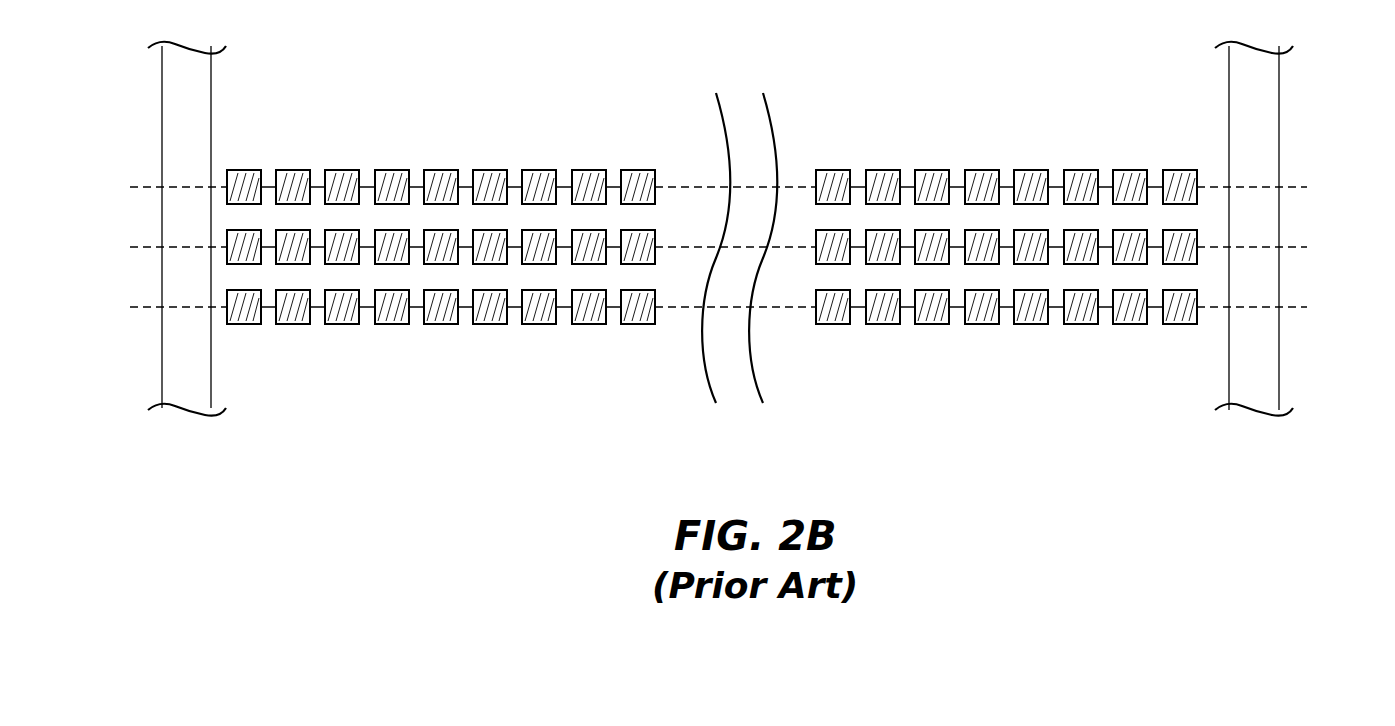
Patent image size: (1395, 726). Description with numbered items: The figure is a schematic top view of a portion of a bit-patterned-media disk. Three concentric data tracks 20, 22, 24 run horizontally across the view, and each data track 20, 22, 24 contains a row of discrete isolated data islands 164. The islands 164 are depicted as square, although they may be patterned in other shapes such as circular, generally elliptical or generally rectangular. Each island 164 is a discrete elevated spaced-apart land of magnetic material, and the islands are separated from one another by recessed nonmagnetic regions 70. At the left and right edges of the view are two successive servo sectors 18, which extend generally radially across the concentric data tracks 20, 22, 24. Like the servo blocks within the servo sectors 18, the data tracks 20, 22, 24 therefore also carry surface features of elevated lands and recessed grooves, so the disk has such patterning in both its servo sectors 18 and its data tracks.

The servo sector 18 is at (196, 83).
The data track 20 is at (1298, 308).
The data track 22 is at (1298, 248).
The data track 24 is at (1298, 188).
The recessed nonmagnetic region 70 is at (415, 258).
The data island 164 is at (655, 146).